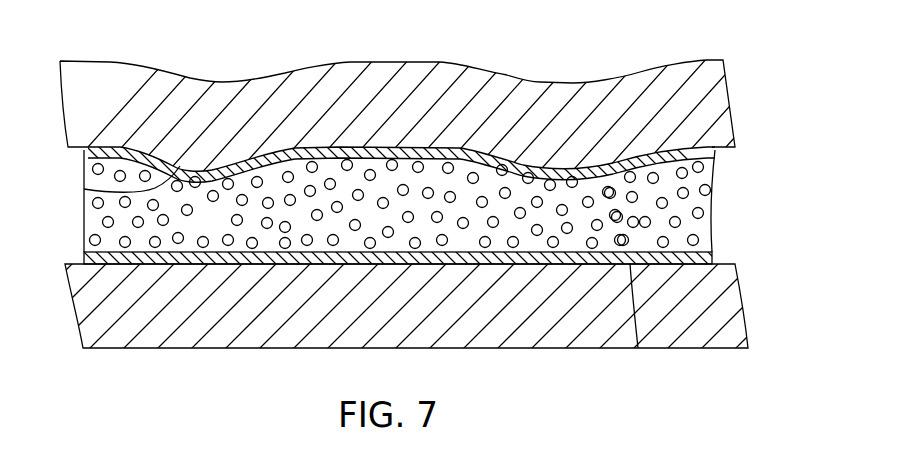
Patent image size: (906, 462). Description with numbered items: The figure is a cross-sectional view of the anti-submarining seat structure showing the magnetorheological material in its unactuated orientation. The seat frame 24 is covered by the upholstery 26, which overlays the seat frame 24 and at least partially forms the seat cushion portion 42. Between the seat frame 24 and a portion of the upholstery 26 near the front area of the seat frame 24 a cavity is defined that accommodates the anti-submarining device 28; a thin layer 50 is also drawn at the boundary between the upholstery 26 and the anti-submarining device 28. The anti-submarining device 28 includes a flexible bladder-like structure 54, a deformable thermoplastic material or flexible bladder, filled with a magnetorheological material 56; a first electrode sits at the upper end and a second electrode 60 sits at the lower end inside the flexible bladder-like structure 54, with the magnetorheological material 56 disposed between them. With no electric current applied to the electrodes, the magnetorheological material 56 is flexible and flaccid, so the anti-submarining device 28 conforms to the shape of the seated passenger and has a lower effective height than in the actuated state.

The seat frame 24 is at (582, 310).
The upholstery 26 is at (575, 118).
The anti-submarining device 28 is at (712, 193).
The seat cushion portion 42 is at (232, 82).
The membrane layer 50 is at (85, 188).
The flexible bladder-like structure 54 is at (638, 348).
The magnetorheological material 56 is at (687, 225).
The second electrode 60 is at (213, 258).